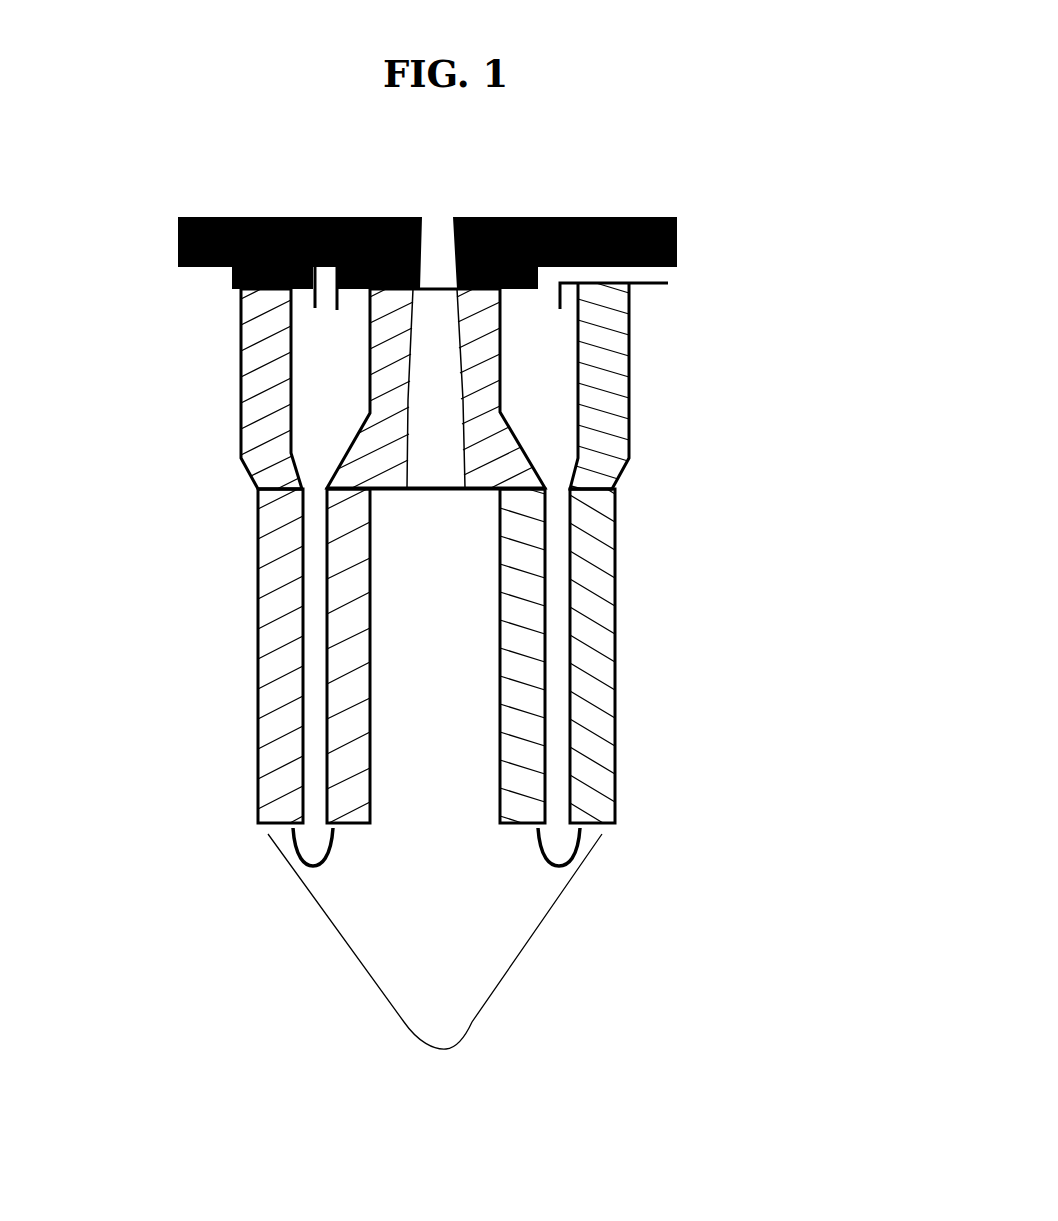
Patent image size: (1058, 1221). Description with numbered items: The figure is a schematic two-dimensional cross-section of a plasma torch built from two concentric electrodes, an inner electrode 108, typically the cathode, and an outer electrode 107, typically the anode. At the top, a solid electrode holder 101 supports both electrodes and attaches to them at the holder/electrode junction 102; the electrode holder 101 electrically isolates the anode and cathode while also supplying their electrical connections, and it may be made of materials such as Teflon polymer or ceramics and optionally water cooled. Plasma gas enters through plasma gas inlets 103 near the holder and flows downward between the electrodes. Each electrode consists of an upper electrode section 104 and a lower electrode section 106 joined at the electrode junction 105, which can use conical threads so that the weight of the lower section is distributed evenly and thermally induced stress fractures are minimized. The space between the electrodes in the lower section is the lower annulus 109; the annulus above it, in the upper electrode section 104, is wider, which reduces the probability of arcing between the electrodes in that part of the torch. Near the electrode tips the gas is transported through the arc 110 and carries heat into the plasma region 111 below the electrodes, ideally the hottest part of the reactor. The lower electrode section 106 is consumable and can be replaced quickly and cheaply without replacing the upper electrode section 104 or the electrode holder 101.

The electrode holder 101 is at (682, 243).
The holder/electrode junction 102 is at (235, 292).
The plasma gas inlet 103 is at (328, 302).
The upper electrode section 104 is at (648, 458).
The electrode junction 105 is at (625, 491).
The lower electrode section 106 is at (475, 656).
The outer electrode 107 is at (610, 622).
The inner electrode 108 is at (537, 675).
The lower annulus 109 is at (557, 736).
The arc 110 is at (585, 841).
The plasma region 111 is at (565, 938).